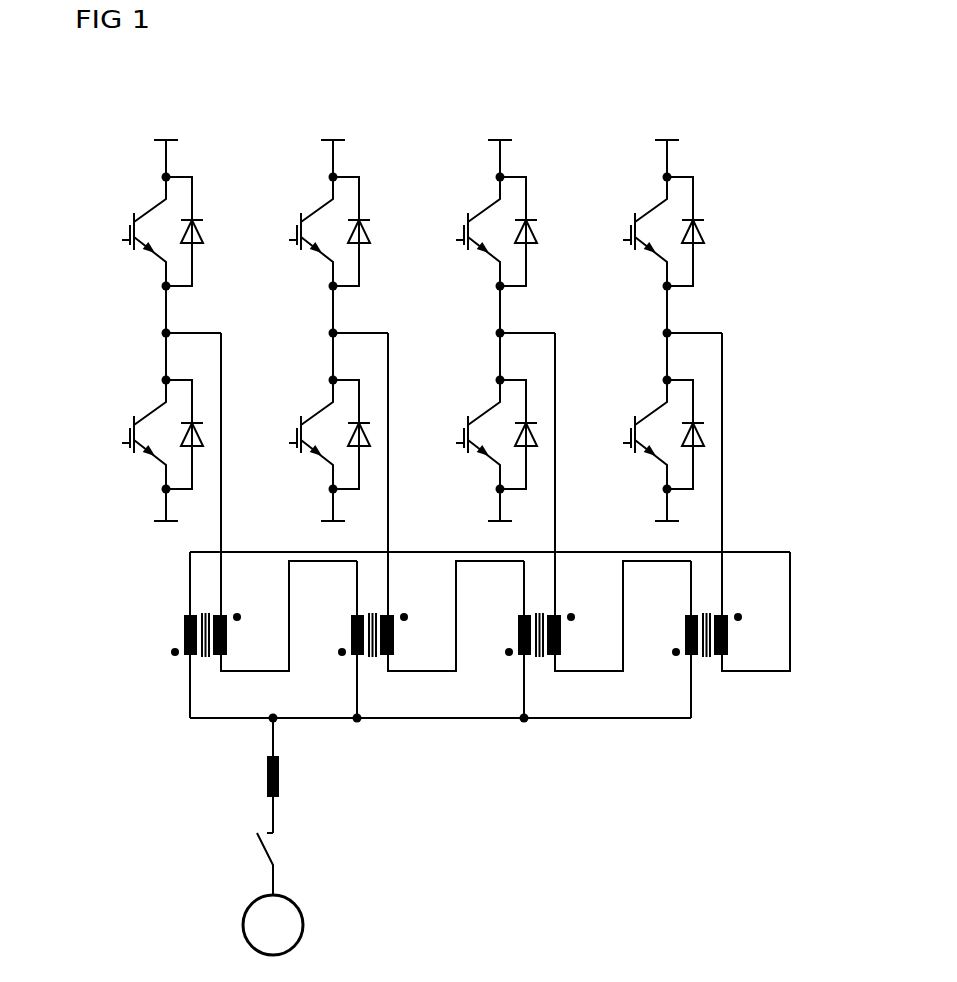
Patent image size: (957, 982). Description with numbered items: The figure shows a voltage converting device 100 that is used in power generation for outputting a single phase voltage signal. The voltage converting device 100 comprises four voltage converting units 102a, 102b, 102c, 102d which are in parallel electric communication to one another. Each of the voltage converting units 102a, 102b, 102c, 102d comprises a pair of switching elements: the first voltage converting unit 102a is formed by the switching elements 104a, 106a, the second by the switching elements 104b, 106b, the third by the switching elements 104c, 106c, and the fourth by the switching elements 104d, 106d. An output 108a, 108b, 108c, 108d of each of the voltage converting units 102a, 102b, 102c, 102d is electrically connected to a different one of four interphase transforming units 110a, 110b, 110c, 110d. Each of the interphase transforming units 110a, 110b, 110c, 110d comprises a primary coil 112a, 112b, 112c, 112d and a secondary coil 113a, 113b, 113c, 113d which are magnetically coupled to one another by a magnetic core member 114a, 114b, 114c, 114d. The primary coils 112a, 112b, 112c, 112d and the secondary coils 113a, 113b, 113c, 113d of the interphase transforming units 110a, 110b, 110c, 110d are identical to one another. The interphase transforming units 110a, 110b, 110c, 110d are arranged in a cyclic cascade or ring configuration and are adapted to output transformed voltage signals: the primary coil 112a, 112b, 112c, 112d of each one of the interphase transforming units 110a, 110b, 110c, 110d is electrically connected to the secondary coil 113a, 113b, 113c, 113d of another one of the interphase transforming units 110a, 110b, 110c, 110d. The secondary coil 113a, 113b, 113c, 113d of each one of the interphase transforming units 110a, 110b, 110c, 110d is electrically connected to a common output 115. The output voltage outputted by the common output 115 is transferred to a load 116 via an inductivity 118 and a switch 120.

The voltage converting device 100 is at (598, 82).
The voltage converting unit 102a is at (166, 113).
The voltage converting unit 102b is at (333, 113).
The voltage converting unit 102c is at (500, 113).
The voltage converting unit 102d is at (667, 113).
The switching element 104a is at (148, 212).
The switching element 104b is at (315, 212).
The switching element 104c is at (482, 212).
The switching element 104d is at (649, 212).
The switching element 106a is at (148, 419).
The switching element 106b is at (315, 419).
The switching element 106c is at (482, 419).
The switching element 106d is at (649, 419).
The output 108a is at (169, 331).
The output 108b is at (336, 331).
The output 108c is at (503, 331).
The output 108d is at (670, 331).
The interphase transforming unit 110a is at (207, 695).
The interphase transforming unit 110b is at (377, 695).
The interphase transforming unit 110c is at (544, 695).
The interphase transforming unit 110d is at (711, 695).
The primary coil 112a is at (188, 657).
The primary coil 112b is at (355, 657).
The primary coil 112c is at (522, 657).
The primary coil 112d is at (689, 657).
The secondary coil 113a is at (227, 613).
The secondary coil 113b is at (394, 613).
The secondary coil 113c is at (561, 613).
The secondary coil 113d is at (728, 613).
The magnetic core member 114a is at (198, 612).
The magnetic core member 114b is at (365, 612).
The magnetic core member 114c is at (532, 612).
The magnetic core member 114d is at (699, 612).
The common output 115 is at (276, 724).
The inductivity 118 is at (281, 777).
The switch 120 is at (262, 848).
The load 116 is at (243, 925).